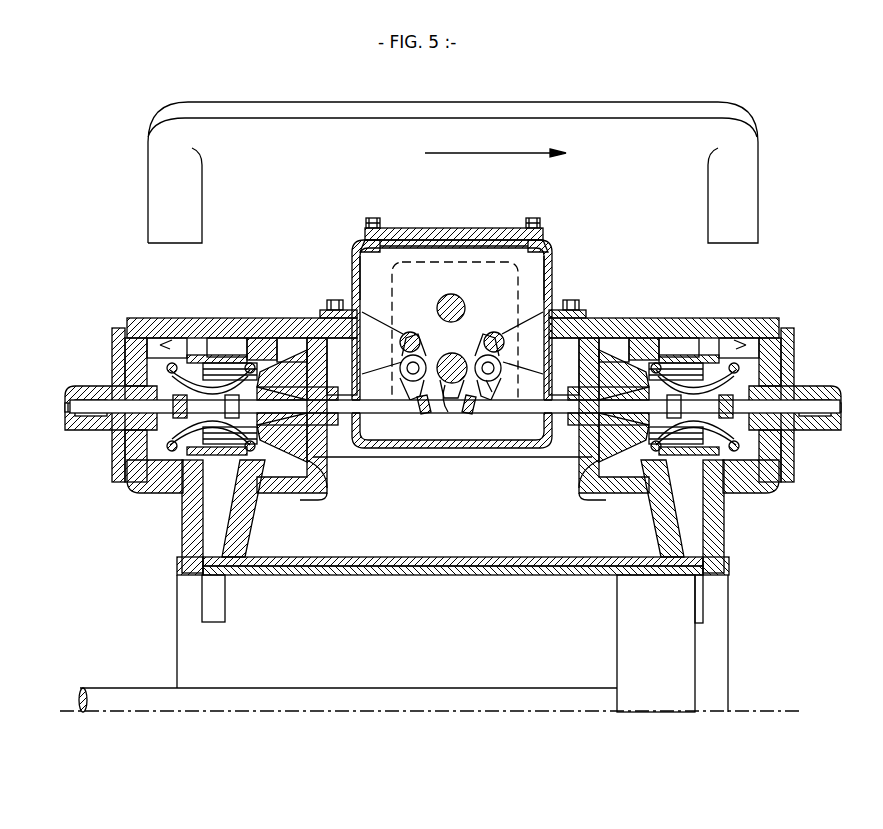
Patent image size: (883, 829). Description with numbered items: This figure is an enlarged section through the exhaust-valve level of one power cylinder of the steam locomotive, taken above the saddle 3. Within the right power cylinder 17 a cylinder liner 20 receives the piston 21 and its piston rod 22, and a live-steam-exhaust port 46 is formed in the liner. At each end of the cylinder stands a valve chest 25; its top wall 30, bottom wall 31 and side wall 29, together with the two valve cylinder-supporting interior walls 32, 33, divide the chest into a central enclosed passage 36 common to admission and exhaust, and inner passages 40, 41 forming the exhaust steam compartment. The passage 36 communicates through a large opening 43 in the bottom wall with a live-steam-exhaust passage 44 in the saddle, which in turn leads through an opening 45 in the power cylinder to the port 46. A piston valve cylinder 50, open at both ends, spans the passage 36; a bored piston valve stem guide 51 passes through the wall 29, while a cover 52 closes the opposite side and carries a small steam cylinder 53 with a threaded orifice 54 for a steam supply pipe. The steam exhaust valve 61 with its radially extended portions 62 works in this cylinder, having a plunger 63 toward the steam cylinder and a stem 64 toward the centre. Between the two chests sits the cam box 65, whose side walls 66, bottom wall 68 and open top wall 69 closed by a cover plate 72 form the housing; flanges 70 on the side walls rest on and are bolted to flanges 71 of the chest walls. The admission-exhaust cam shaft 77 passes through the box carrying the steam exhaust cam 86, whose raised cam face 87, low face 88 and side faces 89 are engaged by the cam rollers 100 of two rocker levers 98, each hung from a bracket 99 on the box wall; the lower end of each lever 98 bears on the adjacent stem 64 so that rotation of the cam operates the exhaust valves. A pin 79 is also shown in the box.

The saddle 3 is at (742, 203).
The right power cylinder 17 is at (360, 631).
The cylinder liner 20 is at (504, 578).
The piston 21 is at (672, 643).
The piston rod 22 is at (344, 692).
The valve chest 25 is at (131, 320).
The side wall 29 is at (318, 452).
The top wall 30 is at (248, 332).
The bottom wall 31 is at (300, 494).
The valve cylinder-supporting interior wall 32 is at (162, 322).
The valve cylinder-supporting interior wall 33 is at (318, 488).
The enclosed passage 36 is at (216, 332).
The inner passage 40 is at (172, 325).
The inner passage 41 is at (288, 334).
The opening 43 is at (256, 492).
The live-steam-exhaust passage 44 is at (180, 542).
The opening 45 is at (200, 580).
The live-steam-exhaust port 46 is at (222, 578).
The piston valve cylinder 50 is at (236, 345).
The piston valve stem guide 51 is at (338, 414).
The cover 52 is at (112, 348).
The steam cylinder 53 is at (82, 388).
The threaded orifice 54 is at (64, 406).
The steam exhaust valve 61 is at (236, 450).
The radially extended portions 62 is at (255, 345).
The plunger 63 is at (118, 410).
The stem 64 is at (395, 418).
The cam box 65 is at (546, 259).
The side wall 66 is at (552, 284).
The bottom wall 68 is at (478, 448).
The top wall 69 is at (500, 238).
The flange 70 is at (330, 312).
The flange 71 is at (451, 366).
The cover plate 72 is at (416, 238).
The steam admission-exhaust cam shaft 77 is at (447, 353).
The pivot pin 79 is at (463, 300).
The steam exhaust cam 86 is at (426, 414).
The raised cam face 87 is at (450, 414).
The low face 88 is at (460, 354).
The side faces 89 is at (474, 412).
The rocker lever 98 is at (484, 388).
The bracket 99 is at (452, 343).
The cam roller 100 is at (400, 376).